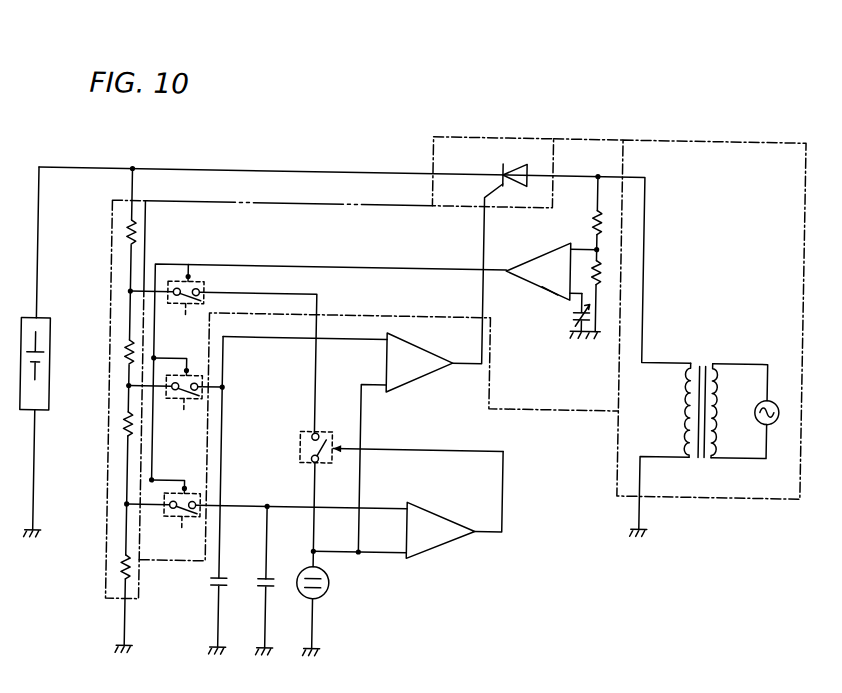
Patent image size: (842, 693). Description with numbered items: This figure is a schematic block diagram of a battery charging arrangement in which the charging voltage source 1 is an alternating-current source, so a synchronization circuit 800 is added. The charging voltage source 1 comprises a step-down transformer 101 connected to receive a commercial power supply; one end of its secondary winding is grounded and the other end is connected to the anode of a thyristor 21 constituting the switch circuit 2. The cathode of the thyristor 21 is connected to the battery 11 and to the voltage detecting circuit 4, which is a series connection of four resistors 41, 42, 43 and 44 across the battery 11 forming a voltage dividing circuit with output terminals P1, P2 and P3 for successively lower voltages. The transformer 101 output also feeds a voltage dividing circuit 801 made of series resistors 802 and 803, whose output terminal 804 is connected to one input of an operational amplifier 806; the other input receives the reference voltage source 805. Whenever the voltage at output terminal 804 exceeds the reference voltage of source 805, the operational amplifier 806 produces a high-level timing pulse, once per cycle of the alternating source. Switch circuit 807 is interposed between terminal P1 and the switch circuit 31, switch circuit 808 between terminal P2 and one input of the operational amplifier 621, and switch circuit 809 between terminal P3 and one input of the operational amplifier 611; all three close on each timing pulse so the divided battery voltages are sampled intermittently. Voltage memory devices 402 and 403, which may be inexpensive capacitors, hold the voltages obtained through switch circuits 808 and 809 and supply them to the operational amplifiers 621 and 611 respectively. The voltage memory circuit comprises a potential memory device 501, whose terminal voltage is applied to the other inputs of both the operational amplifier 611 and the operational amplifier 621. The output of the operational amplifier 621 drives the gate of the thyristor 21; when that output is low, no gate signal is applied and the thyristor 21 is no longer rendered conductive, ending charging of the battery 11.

The charging voltage source 1 is at (707, 135).
The switch circuit 2 is at (431, 135).
The voltage detecting circuit 4 is at (109, 204).
The battery 11 is at (45, 415).
The thyristor 21 is at (517, 167).
The switch circuit 31 is at (301, 447).
The resistor 41 is at (128, 236).
The resistor 42 is at (128, 352).
The resistor 43 is at (128, 425).
The resistor 44 is at (128, 570).
The output terminal P1 is at (128, 294).
The output terminal P2 is at (128, 389).
The output terminal P3 is at (128, 508).
The step-down transformer 101 is at (703, 358).
The voltage memory device 402 is at (219, 588).
The voltage memory device 403 is at (268, 590).
The potential memory device 501 is at (326, 596).
The operational amplifier 611 is at (432, 548).
The operational amplifier 621 is at (422, 368).
The synchronization circuit 800 is at (577, 408).
The voltage dividing circuit 801 is at (604, 310).
The resistor 802 is at (594, 208).
The resistor 803 is at (598, 268).
The output terminal 804 is at (594, 245).
The reference voltage source 805 is at (575, 320).
The operational amplifier 806 is at (548, 288).
The switch circuit 807 is at (186, 304).
The switch circuit 808 is at (177, 400).
The switch circuit 809 is at (175, 517).